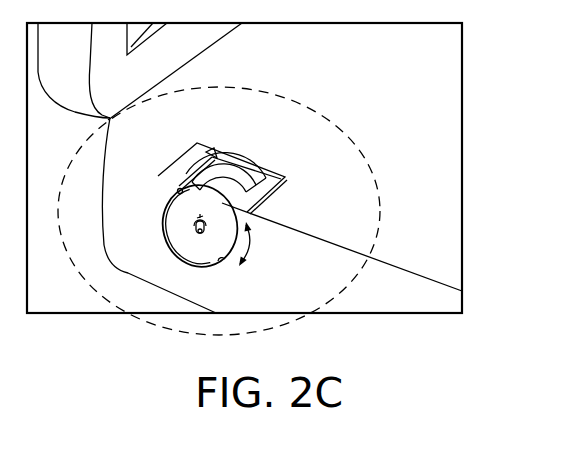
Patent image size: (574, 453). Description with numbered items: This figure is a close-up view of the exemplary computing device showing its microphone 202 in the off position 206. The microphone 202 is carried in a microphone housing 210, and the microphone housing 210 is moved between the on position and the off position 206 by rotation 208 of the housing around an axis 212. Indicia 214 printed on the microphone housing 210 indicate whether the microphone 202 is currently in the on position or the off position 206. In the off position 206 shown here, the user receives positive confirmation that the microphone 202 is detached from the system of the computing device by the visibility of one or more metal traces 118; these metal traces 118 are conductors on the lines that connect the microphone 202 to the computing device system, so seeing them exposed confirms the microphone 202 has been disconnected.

The metal traces 118 is at (211, 152).
The microphone 202 is at (165, 228).
The off position 206 is at (303, 106).
The rotation 208 is at (252, 260).
The microphone housing 210 is at (187, 262).
The axis 212 is at (195, 237).
The indicia 214 is at (186, 212).